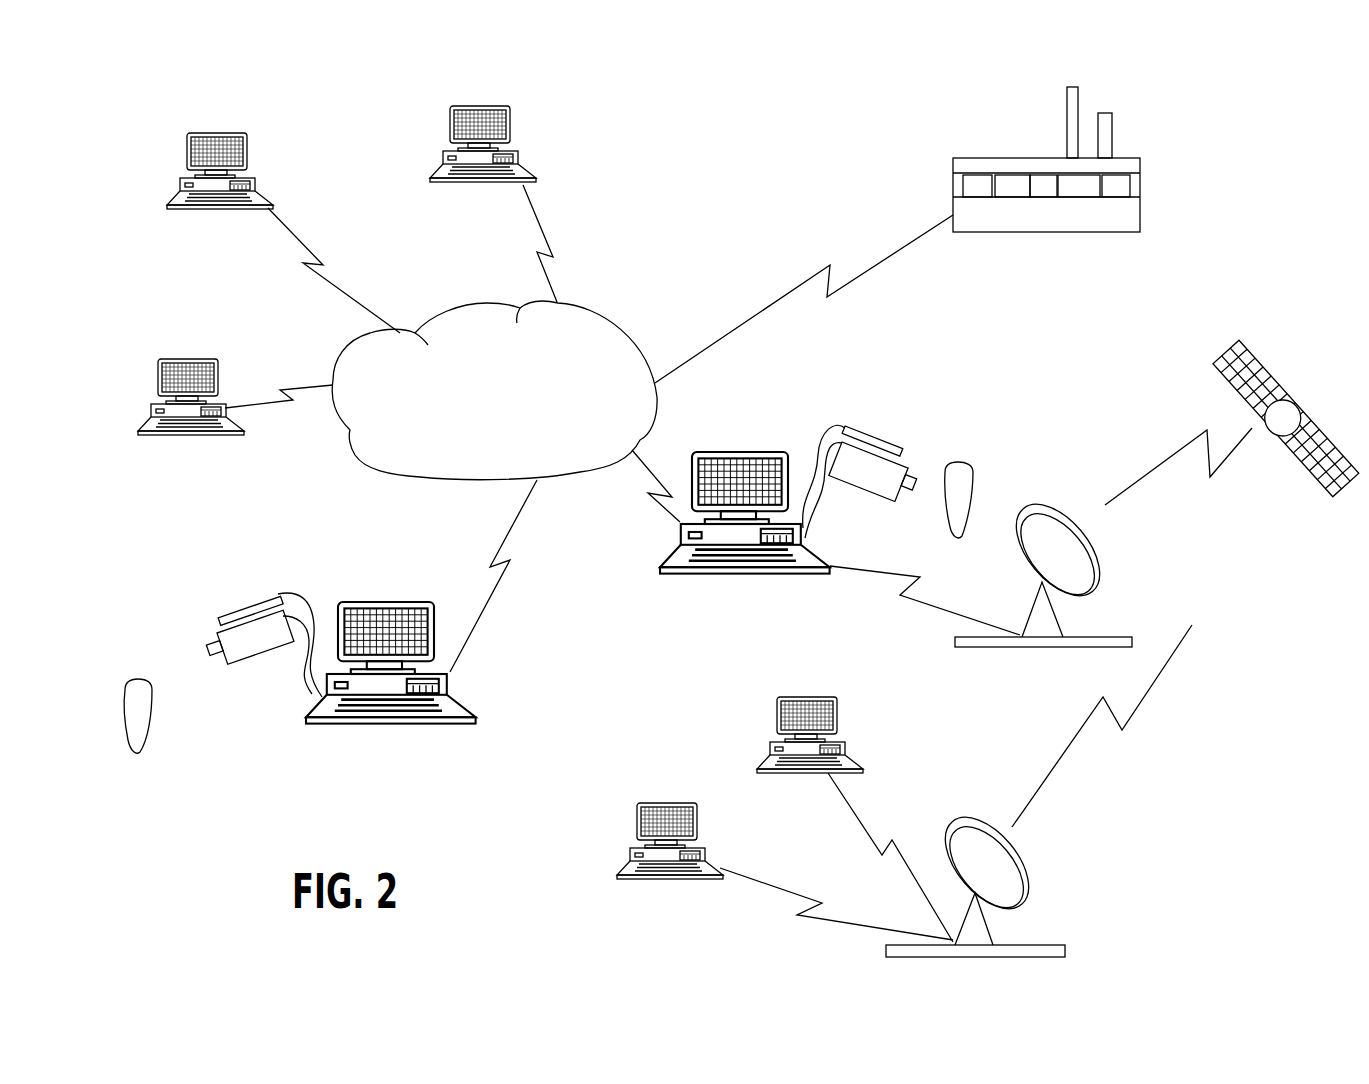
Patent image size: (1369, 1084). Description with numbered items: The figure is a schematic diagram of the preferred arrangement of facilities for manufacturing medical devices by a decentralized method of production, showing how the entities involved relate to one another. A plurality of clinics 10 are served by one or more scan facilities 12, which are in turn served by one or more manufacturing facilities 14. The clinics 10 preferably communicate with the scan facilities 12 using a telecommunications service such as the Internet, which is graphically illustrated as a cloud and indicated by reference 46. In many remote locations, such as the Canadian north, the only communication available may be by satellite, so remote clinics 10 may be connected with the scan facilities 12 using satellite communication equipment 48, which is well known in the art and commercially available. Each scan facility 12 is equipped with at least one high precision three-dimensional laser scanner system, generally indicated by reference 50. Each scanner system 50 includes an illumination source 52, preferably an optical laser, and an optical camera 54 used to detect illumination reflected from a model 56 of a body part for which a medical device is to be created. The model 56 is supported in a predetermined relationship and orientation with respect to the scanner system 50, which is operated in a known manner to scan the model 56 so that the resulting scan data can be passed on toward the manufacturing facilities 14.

The clinic 10 is at (235, 133).
The scan facility 12 is at (445, 698).
The manufacturing facility 14 is at (1126, 212).
The telecommunications service 46 is at (512, 410).
The satellite communication equipment 48 is at (1042, 647).
The 3-D laser scanner system 50 is at (584, 527).
The illumination source 52 is at (278, 597).
The optical camera 54 is at (258, 652).
The model 56 is at (140, 722).